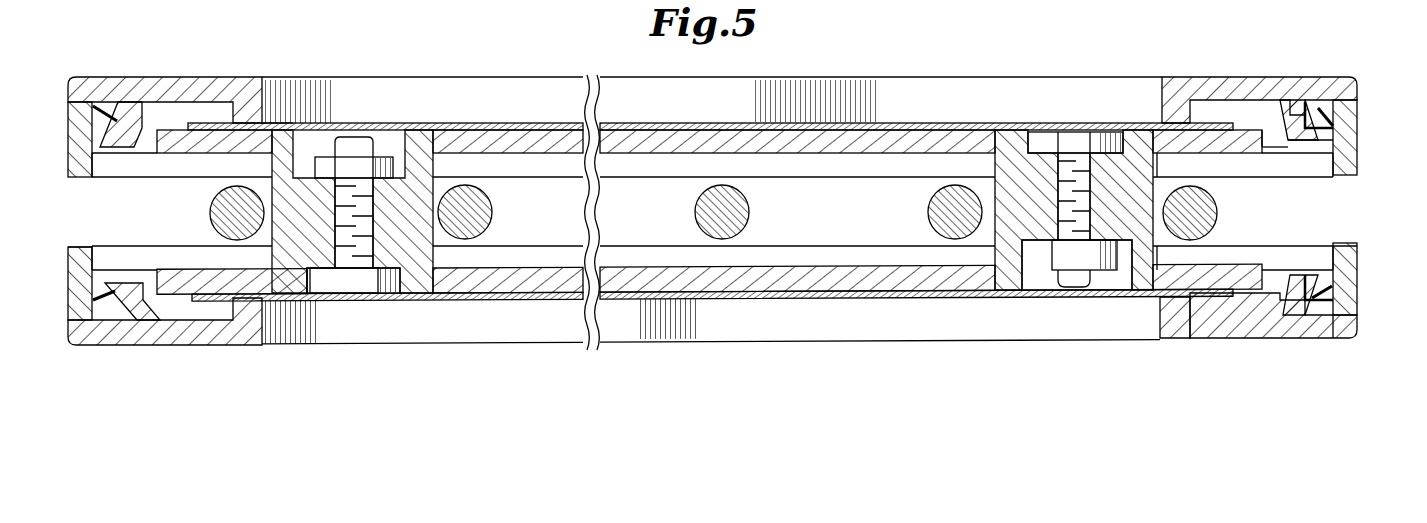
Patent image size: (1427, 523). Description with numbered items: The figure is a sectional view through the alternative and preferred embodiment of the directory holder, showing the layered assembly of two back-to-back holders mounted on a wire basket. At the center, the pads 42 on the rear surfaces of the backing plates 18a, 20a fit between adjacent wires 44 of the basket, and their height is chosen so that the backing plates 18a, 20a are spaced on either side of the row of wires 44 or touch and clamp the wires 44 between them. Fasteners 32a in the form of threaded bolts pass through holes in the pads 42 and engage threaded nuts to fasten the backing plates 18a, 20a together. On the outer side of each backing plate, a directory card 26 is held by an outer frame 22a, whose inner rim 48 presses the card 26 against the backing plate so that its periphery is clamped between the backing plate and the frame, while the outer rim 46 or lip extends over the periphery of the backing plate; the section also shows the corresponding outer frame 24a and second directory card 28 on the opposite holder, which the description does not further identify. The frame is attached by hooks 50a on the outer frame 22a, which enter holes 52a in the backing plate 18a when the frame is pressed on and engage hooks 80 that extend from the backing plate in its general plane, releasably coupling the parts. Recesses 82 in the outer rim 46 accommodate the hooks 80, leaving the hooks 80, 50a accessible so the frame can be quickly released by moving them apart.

The backing plate 18a is at (555, 282).
The backing plate 20a is at (510, 145).
The outer frame 22a is at (1236, 325).
The upper end plate 24a is at (1218, 90).
The directory card 26 is at (882, 297).
The upper skin sheet 28 is at (880, 122).
The fastener 32a is at (347, 278).
The pad 42 is at (423, 257).
The wire 44 is at (745, 203).
The outer rim 46 is at (66, 322).
The inner rim 48 is at (1167, 317).
The hook 50a is at (122, 285).
The hole 52a is at (155, 145).
The hook 80 is at (1337, 300).
The recess 82 is at (68, 102).